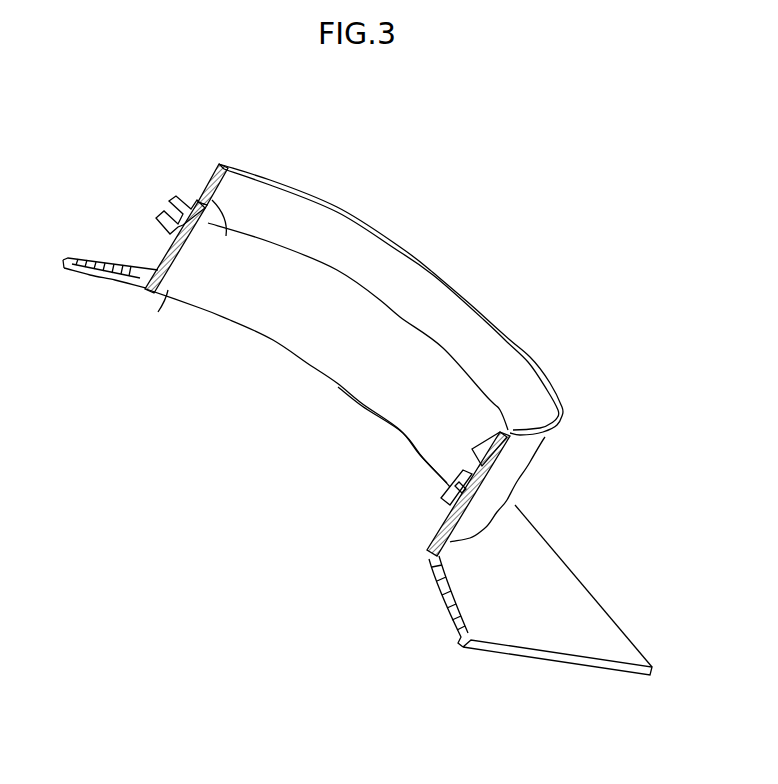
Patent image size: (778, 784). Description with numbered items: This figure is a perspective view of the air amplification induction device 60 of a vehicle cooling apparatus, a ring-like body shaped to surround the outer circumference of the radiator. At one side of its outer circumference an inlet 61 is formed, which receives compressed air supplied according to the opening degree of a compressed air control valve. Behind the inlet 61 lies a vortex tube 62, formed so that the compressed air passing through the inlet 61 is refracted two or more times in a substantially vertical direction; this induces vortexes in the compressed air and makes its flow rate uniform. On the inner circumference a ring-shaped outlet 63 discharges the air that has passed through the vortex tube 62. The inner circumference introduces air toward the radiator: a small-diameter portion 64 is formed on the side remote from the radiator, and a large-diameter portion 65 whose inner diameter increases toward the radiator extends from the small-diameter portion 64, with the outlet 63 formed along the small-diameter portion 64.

The air amplification induction device 60 is at (515, 172).
The inlet 61 is at (188, 218).
The vortex tube 62 is at (182, 237).
The ring-shaped outlet 63 is at (216, 226).
The small-diameter portion 64 is at (215, 207).
The large-diameter portion 65 is at (168, 292).